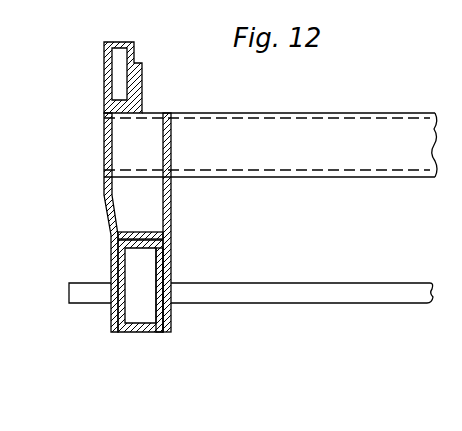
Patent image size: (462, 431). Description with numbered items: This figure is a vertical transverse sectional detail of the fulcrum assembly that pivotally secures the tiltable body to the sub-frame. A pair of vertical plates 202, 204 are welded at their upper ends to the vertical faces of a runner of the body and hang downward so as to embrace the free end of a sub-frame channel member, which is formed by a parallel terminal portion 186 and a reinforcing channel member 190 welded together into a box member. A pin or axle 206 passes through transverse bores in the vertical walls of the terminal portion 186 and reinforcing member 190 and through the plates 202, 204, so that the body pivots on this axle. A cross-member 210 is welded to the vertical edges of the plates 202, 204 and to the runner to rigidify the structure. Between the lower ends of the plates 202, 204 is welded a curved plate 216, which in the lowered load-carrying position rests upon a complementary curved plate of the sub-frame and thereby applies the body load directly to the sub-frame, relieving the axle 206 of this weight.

The parallel terminal portion 186 is at (130, 326).
The reinforcing channel member 190 is at (158, 329).
The vertical plate 202 is at (105, 193).
The vertical plate 204 is at (172, 223).
The pin or axle 206 is at (300, 283).
The cross-member 210 is at (288, 165).
The curved plate 216 is at (129, 232).